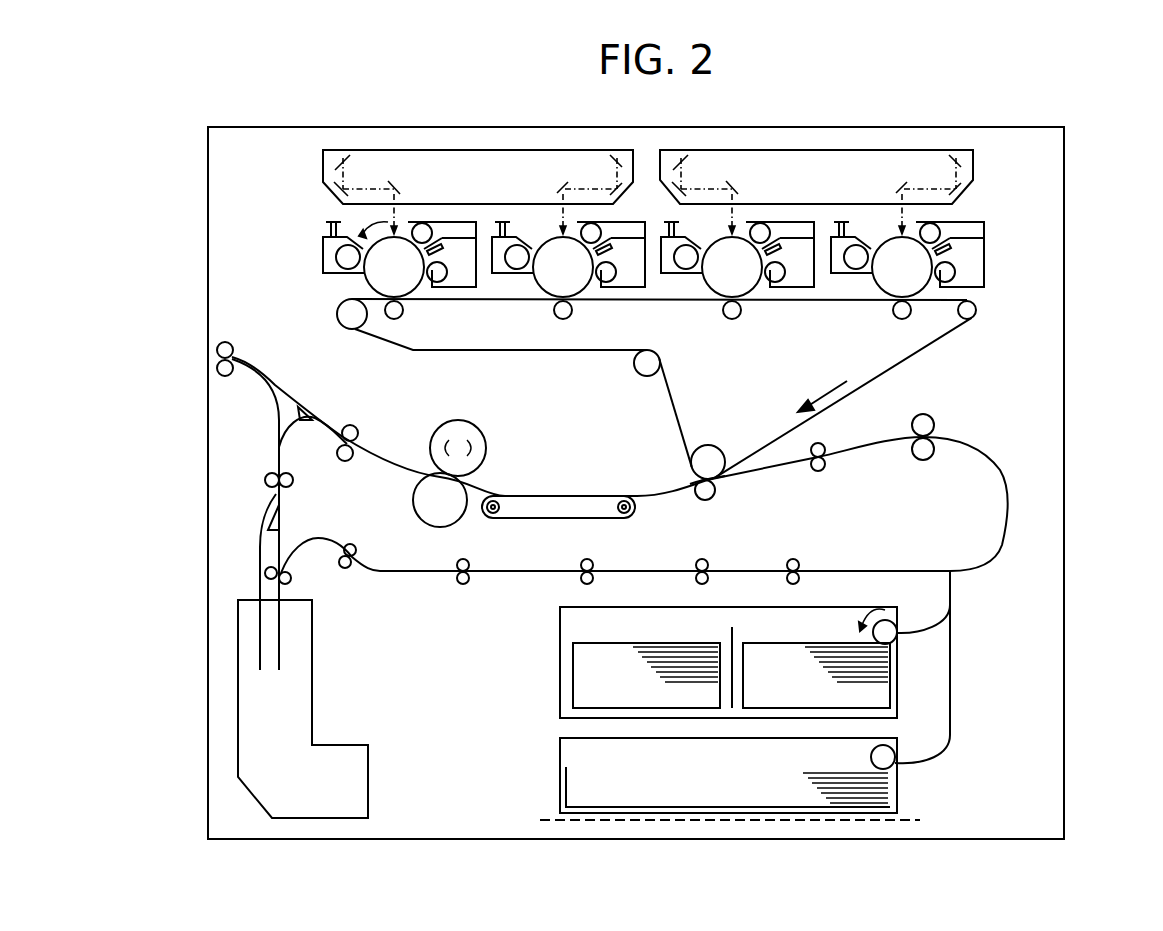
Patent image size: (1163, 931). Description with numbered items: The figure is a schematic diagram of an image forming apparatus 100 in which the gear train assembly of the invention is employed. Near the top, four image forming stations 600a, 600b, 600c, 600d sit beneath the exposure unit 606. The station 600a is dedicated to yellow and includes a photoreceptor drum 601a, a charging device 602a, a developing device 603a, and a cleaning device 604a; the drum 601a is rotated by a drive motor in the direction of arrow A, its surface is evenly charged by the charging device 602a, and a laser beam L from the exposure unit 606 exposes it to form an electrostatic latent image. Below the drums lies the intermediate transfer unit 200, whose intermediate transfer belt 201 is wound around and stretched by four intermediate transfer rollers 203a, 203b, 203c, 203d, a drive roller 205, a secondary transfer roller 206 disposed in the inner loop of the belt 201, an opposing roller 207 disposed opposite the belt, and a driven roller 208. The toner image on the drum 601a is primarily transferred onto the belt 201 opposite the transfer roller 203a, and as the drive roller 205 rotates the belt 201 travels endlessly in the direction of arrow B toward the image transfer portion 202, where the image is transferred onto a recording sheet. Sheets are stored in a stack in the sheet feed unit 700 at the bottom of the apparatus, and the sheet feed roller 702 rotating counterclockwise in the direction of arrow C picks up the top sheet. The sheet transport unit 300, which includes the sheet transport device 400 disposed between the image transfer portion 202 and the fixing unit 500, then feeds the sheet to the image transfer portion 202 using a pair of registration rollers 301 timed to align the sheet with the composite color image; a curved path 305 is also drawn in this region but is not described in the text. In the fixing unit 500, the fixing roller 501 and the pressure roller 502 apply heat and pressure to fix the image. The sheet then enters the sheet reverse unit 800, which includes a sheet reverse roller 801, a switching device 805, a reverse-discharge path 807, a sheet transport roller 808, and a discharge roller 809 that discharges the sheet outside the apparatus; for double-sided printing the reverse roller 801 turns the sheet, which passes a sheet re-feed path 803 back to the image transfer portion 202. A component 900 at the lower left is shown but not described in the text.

The image forming apparatus 100 is at (1096, 112).
The intermediate transfer unit 200 is at (696, 376).
The intermediate transfer belt 201 is at (883, 376).
The image transfer portion 202 is at (726, 483).
The intermediate transfer roller 203a is at (400, 315).
The intermediate transfer roller 203b is at (572, 312).
The intermediate transfer roller 203c is at (723, 314).
The intermediate transfer roller 203d is at (893, 314).
The drive roller 205 is at (977, 313).
The secondary transfer roller 206 is at (709, 445).
The opposing roller 207 is at (697, 498).
The driven roller 208 is at (635, 366).
The sheet transport unit 300 is at (931, 470).
The pair of registration rollers 301 is at (825, 467).
The discharge path 305 is at (999, 462).
The sheet transport device 400 is at (565, 496).
The fixing unit 500 is at (441, 454).
The fixing roller 501 is at (472, 430).
The pressure roller 502 is at (418, 518).
The image forming station 600a is at (392, 250).
The image forming station 600b is at (541, 222).
The image forming station 600c is at (751, 222).
The image forming station 600d is at (975, 207).
The photoreceptor drum 601a is at (380, 276).
The charging device 602a is at (424, 226).
The developing device 603a is at (345, 257).
The cleaning device 604a is at (445, 258).
The exposure unit 606 is at (395, 150).
The sheet feed unit 700 is at (690, 713).
The sheet feed roller 702 is at (872, 637).
The sheet reverse unit 800 is at (559, 534).
The sheet reverse roller 801 is at (291, 577).
The sheet re-feed path 803 is at (521, 571).
The switching device 805 is at (281, 531).
The reverse-discharge path 807 is at (276, 414).
The sheet transport roller 808 is at (349, 569).
The discharge roller 809 is at (229, 346).
The manual feed tray 900 is at (312, 694).